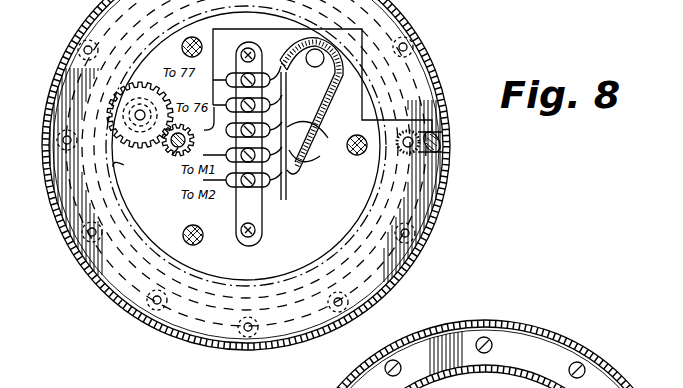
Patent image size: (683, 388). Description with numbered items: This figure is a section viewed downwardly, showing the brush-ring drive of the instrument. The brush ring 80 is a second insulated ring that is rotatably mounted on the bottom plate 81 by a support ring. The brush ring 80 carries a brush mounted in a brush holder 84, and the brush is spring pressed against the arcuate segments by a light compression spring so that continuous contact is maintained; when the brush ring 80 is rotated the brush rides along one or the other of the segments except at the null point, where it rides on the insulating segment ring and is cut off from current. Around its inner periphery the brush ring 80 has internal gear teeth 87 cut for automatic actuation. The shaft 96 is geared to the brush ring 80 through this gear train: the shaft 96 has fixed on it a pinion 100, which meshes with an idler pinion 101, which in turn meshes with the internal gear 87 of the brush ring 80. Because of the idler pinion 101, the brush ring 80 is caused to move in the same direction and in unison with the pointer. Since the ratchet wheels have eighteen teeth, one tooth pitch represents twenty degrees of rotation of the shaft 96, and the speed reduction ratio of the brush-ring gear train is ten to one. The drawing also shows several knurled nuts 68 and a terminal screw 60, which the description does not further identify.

The brush ring 80 is at (82, 190).
The bottom plate 81 is at (326, 220).
The knurled nut 68 is at (186, 41).
The idler pinion 101 is at (147, 95).
The pinion 100 is at (167, 147).
The internal gear teeth 87 is at (113, 167).
The shaft 96 is at (172, 155).
The terminal screw 60 is at (440, 134).
The brush holder 84 is at (412, 153).